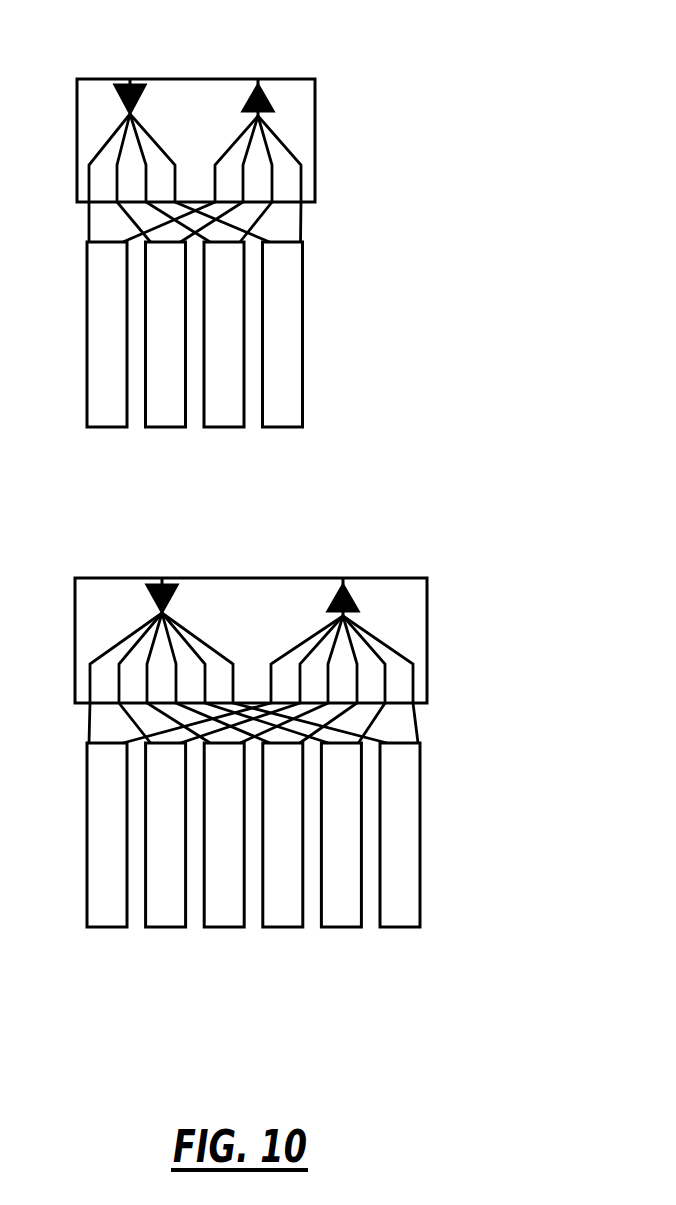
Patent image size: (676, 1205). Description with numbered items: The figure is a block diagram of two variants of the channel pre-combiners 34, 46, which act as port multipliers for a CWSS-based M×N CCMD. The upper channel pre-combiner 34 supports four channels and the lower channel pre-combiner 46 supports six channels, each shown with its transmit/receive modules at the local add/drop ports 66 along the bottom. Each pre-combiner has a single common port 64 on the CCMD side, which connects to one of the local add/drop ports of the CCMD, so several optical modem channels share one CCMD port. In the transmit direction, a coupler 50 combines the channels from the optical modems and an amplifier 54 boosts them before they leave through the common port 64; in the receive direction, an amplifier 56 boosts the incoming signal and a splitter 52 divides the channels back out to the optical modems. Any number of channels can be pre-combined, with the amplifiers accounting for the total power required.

The channel pre-combiner 34 is at (316, 132).
The channel pre-combiner 46 is at (428, 611).
The coupler 50 is at (303, 180).
The splitter 52 is at (95, 178).
The amplifier 54 is at (257, 86).
The amplifier 56 is at (128, 84).
The common port 64 is at (270, 45).
The local add/drop ports 66 is at (313, 238).